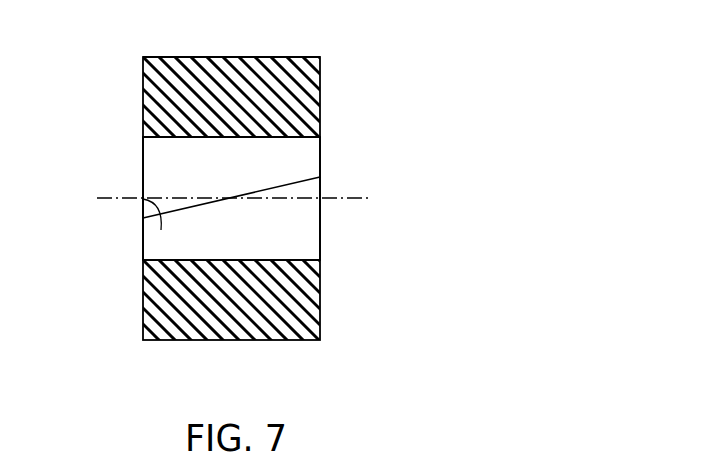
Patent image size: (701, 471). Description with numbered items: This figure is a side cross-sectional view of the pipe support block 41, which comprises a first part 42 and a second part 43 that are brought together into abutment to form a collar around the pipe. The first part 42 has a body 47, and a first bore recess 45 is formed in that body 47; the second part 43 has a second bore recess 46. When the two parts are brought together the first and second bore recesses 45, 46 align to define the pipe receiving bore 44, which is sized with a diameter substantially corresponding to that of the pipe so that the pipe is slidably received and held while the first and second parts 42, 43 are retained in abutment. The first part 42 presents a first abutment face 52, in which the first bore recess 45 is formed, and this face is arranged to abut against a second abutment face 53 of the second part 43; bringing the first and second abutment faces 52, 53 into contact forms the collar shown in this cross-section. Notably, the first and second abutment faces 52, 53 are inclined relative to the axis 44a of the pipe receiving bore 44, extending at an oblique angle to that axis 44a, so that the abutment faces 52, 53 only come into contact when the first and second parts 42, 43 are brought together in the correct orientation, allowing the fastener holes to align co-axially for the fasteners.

The pipe support block 41 is at (502, 93).
The first part 42 is at (303, 97).
The second part 43 is at (312, 297).
The pipe receiving bore 44 is at (320, 155).
The axis of the pipe receiving bore 44a is at (345, 197).
The first bore recess 45 is at (153, 162).
The second bore recess 46 is at (308, 232).
The body 47 is at (238, 73).
The first abutment face 52 is at (142, 198).
The second abutment face 53 is at (170, 213).